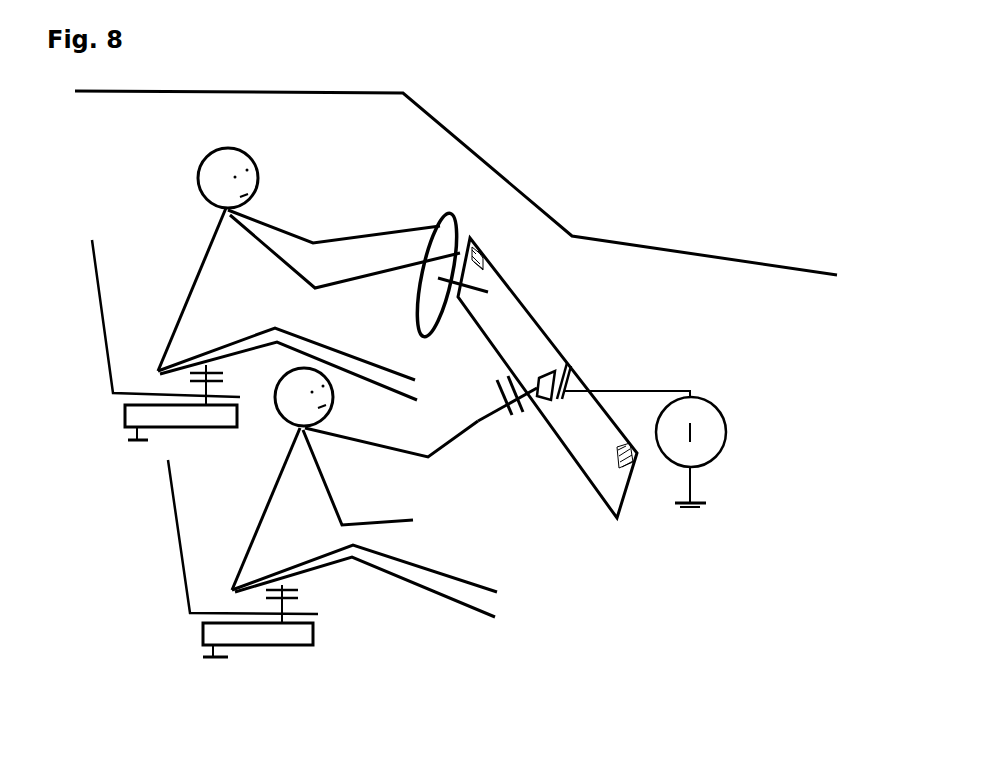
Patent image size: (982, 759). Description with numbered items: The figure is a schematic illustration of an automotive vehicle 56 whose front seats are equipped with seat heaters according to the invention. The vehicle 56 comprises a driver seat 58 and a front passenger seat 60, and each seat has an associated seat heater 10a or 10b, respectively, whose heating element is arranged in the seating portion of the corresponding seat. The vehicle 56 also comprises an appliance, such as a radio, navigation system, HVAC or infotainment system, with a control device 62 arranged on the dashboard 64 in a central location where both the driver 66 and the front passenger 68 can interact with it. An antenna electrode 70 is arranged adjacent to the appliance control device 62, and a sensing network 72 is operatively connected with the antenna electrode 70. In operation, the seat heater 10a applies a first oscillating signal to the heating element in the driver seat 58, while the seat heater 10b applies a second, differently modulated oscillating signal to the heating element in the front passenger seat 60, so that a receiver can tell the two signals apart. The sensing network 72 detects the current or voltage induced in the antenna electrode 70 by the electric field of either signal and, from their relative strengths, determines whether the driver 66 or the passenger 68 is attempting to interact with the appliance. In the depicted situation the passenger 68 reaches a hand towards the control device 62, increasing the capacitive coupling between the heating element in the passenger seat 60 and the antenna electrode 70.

The seat heater 10a is at (123, 415).
The seat heater 10b is at (313, 637).
The automotive vehicle 56 is at (757, 262).
The driver seat 58 is at (100, 270).
The front passenger seat 60 is at (175, 488).
The control device 62 is at (543, 373).
The dashboard 64 is at (537, 310).
The driver 66 is at (250, 152).
The front passenger 68 is at (282, 417).
The antenna electrode 70 is at (562, 398).
The sensing network 72 is at (715, 402).